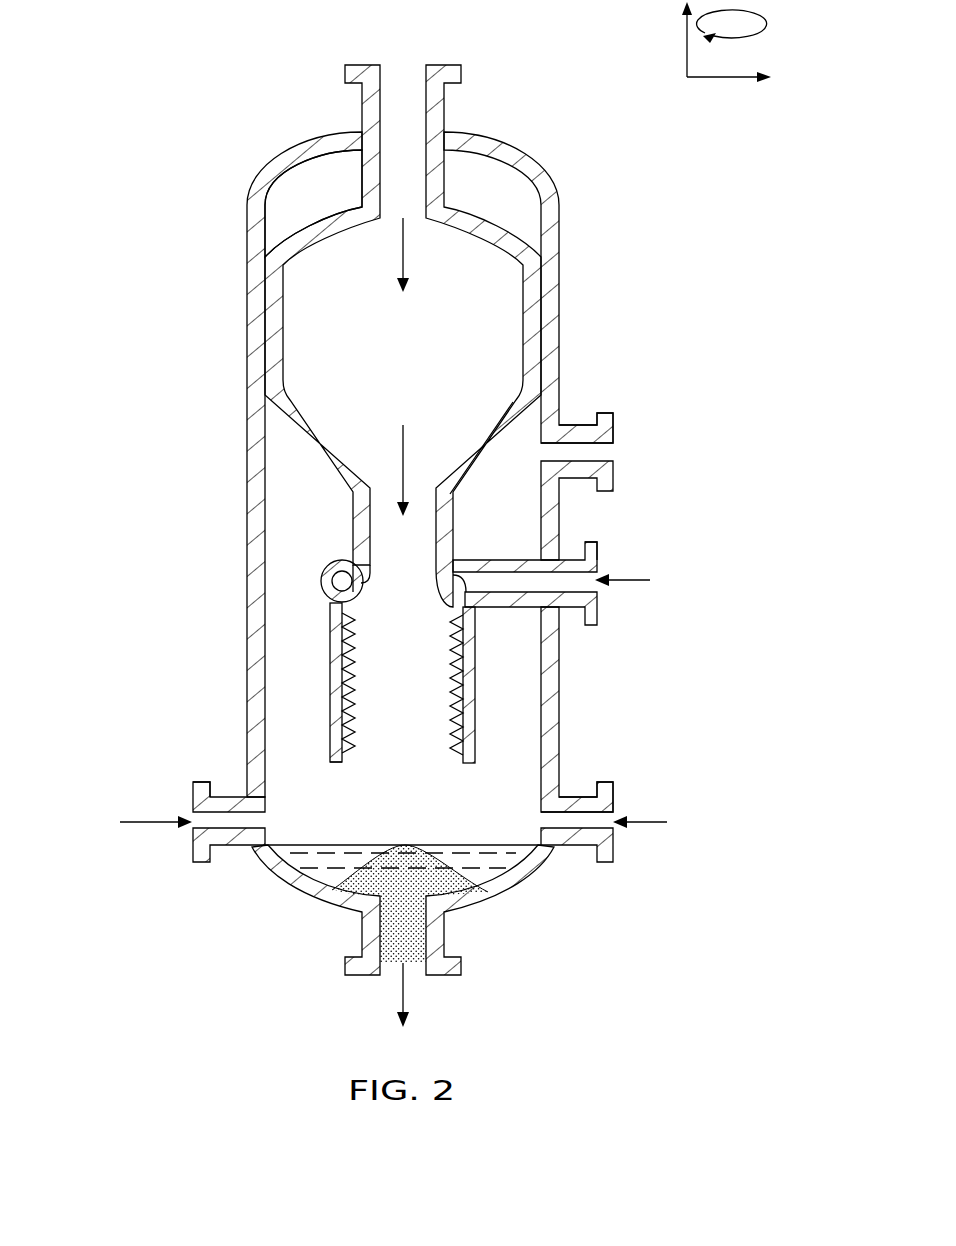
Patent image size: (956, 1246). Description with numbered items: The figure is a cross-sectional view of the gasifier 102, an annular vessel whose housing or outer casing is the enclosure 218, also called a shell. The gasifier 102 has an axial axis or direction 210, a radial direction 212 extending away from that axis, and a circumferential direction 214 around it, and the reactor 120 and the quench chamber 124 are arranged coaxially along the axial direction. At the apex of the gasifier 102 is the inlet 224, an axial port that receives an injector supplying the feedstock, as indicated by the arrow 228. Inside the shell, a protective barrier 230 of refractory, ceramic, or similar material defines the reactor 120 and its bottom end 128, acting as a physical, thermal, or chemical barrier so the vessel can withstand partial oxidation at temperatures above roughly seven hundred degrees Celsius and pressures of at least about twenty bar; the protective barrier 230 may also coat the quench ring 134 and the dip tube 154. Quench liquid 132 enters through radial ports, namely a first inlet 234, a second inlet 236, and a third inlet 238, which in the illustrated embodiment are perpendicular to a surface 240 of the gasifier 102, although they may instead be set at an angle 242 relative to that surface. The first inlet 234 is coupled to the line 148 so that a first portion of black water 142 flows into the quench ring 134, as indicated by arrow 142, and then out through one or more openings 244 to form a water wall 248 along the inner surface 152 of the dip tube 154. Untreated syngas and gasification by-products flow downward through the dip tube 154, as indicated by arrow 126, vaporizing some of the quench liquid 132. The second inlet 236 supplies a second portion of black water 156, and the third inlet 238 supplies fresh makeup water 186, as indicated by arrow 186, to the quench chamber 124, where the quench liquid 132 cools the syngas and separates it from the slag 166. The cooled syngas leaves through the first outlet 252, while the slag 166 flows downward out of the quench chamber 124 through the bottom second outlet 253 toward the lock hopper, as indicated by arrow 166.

The gasifier 102 is at (190, 60).
The reactor 120 is at (500, 212).
The quench chamber 124 is at (578, 741).
The arrow indicating syngas flow 126 is at (405, 462).
The bottom end 128 is at (455, 512).
The quench liquid 132 is at (345, 867).
The quench ring 134 is at (322, 575).
The first portion of black water 142 is at (630, 580).
The line 148 is at (528, 558).
The inner surface of the dip tube 152 is at (362, 748).
The dip tube 154 is at (476, 672).
The second portion of black water 156 is at (648, 820).
The slag 166 is at (447, 858).
The fresh makeup water 186 is at (155, 822).
The axial axis or direction 210 is at (690, 28).
The radial axis or direction 212 is at (720, 78).
The circumferential axis or direction 214 is at (665, 55).
The enclosure 218 is at (560, 330).
The inlet 224 is at (461, 78).
The arrow indicating feedstock supply 228 is at (400, 247).
The protective barrier 230 is at (290, 235).
The first inlet 234 is at (590, 542).
The second inlet 236 is at (598, 782).
The third inlet 238 is at (207, 782).
The surface of the gasifier 240 is at (247, 503).
The angle 242 is at (233, 795).
The openings 244 is at (452, 592).
The water wall 248 is at (355, 658).
The first outlet 252 is at (615, 424).
The outlet flange 253 is at (463, 965).